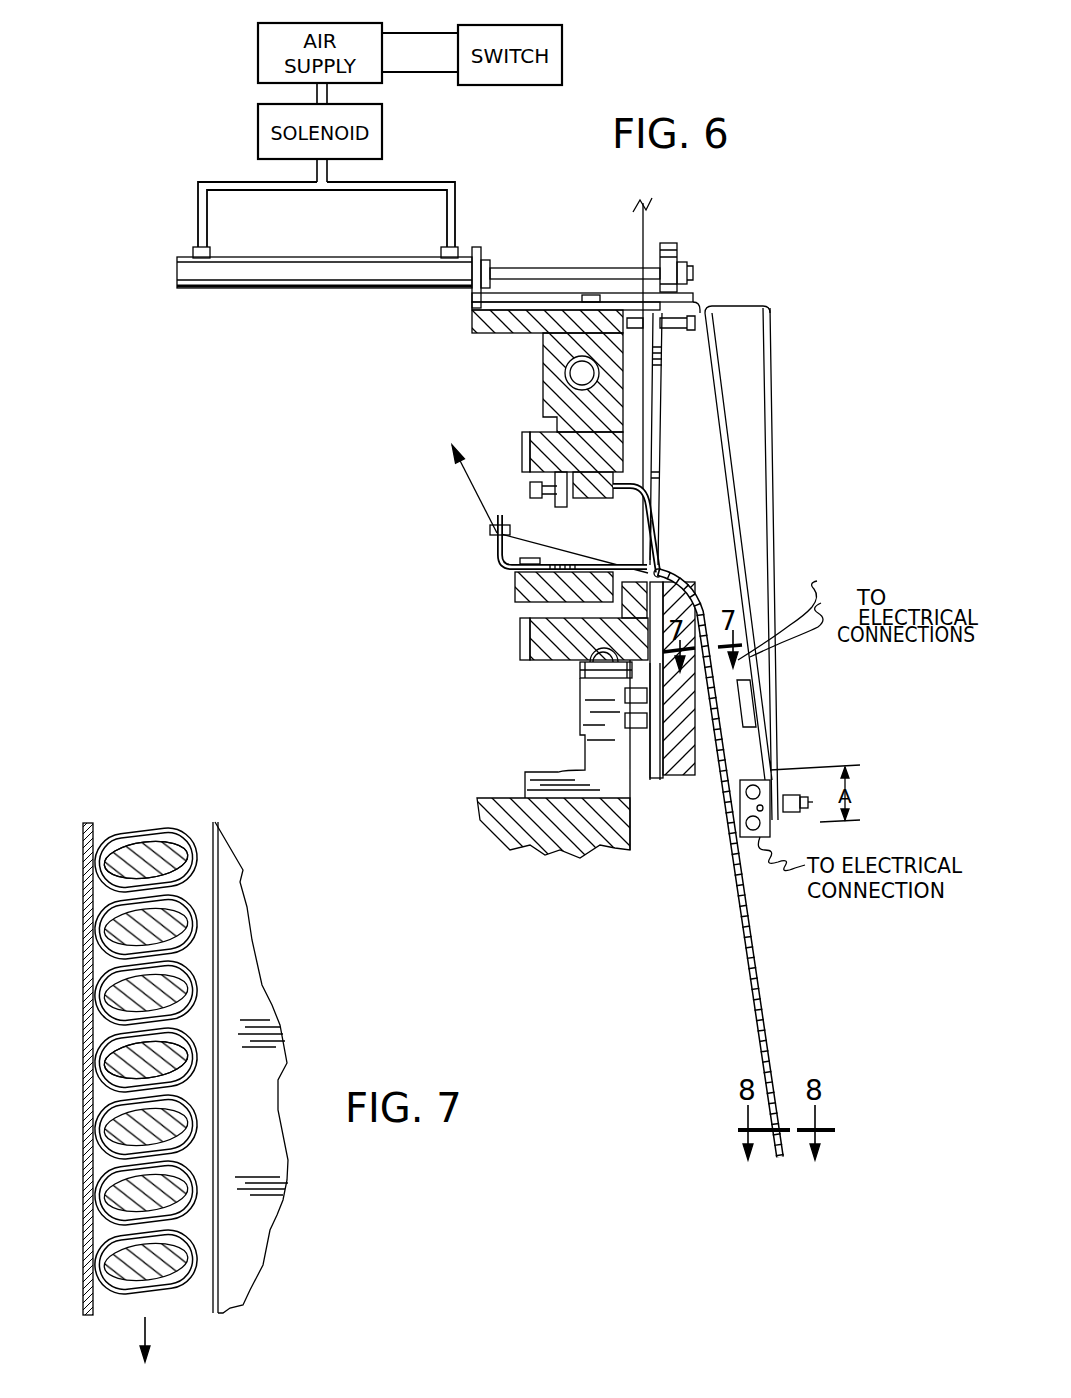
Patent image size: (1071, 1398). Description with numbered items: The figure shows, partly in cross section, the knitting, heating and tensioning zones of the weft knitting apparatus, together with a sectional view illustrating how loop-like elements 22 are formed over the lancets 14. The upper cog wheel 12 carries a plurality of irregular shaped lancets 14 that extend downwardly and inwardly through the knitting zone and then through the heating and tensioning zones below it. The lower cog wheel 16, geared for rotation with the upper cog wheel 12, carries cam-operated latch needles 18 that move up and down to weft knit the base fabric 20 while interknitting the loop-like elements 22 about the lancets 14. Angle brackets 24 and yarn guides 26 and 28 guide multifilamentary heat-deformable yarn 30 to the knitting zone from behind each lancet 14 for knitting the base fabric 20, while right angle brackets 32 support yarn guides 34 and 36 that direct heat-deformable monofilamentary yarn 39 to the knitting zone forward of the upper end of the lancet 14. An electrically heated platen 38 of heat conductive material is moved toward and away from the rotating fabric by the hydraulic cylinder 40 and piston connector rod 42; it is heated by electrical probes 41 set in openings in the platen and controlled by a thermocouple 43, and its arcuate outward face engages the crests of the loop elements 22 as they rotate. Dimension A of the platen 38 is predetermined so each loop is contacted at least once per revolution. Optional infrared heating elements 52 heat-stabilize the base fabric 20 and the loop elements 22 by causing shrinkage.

In FIG. 6, the upper cog wheel 12 is at (527, 450).
In FIG. 6, the lancets 14 is at (640, 512).
In FIG. 7, the lancets 14 is at (172, 856).
In FIG. 6, the lower cog wheel 16 is at (545, 662).
In FIG. 6, the latch needles 18 is at (660, 622).
In FIG. 6, the base fabric 20 is at (752, 948).
In FIG. 7, the base fabric 20 is at (85, 883).
In FIG. 6, the loop-like elements 22 is at (765, 1005).
In FIG. 7, the loop-like elements 22 is at (145, 838).
In FIG. 6, the angle brackets 24 is at (514, 578).
In FIG. 6, the yarn guide 26 is at (492, 532).
In FIG. 6, the yarn guide 28 is at (665, 575).
In FIG. 6, the multifilamentary heat-deformable yarn 30 is at (460, 488).
In FIG. 6, the right angle brackets 32 is at (662, 408).
In FIG. 6, the yarn guide 34 is at (633, 290).
In FIG. 6, the yarn guide 36 is at (660, 535).
In FIG. 6, the electrically heated platen 38 is at (772, 828).
In FIG. 7, the electrically heated platen 38 is at (263, 1222).
In FIG. 6, the heat-deformable monofilamentary yarn 39 is at (645, 228).
In FIG. 6, the hydraulic cylinder 40 is at (315, 265).
In FIG. 6, the electrical probes 41 is at (744, 792).
In FIG. 6, the piston connector rod 42 is at (545, 268).
In FIG. 6, the thermocouple 43 is at (755, 808).
In FIG. 6, the infrared heating elements 52 is at (752, 720).